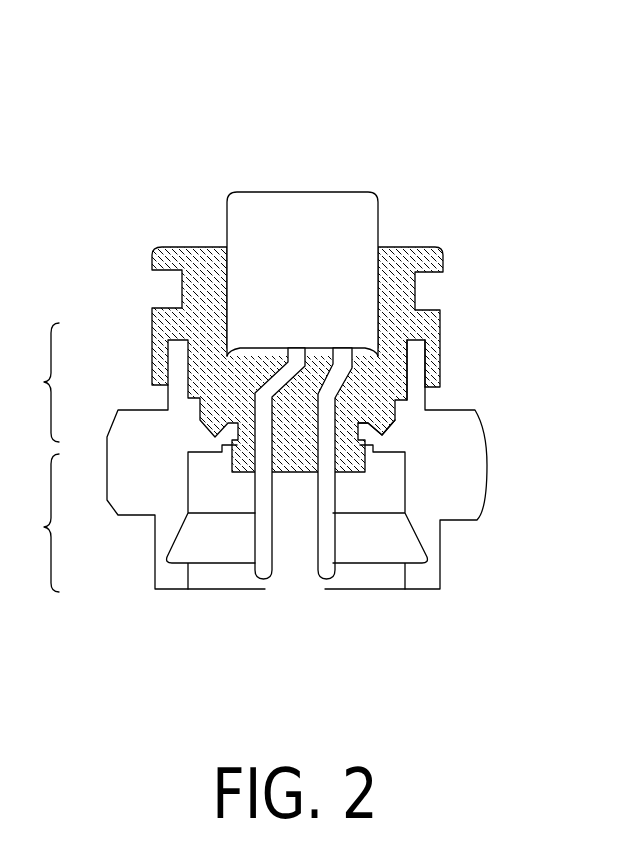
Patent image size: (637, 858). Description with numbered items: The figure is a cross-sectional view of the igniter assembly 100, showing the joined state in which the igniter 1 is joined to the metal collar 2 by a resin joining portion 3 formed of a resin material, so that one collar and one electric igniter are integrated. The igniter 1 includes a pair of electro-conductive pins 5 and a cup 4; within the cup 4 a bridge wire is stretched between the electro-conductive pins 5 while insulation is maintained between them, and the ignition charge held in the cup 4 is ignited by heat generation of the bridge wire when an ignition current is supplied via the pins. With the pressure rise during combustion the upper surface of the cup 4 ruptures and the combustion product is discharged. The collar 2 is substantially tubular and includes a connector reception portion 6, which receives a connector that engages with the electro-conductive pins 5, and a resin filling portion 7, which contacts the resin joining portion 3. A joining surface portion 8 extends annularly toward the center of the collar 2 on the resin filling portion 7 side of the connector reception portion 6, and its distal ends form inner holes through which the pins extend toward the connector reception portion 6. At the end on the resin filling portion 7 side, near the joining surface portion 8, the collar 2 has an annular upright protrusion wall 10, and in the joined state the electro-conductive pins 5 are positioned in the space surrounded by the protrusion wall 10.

The igniter assembly 100 is at (503, 144).
The igniter 1 is at (305, 275).
The collar 2 is at (438, 500).
The resin joining portion 3 is at (210, 257).
The cup 4 is at (327, 190).
The electro-conductive pins 5 is at (325, 578).
The connector reception portion 6 is at (43, 523).
The resin filling portion 7 is at (43, 382).
The joining surface portion 8 is at (390, 432).
The protrusion wall 10 is at (415, 355).